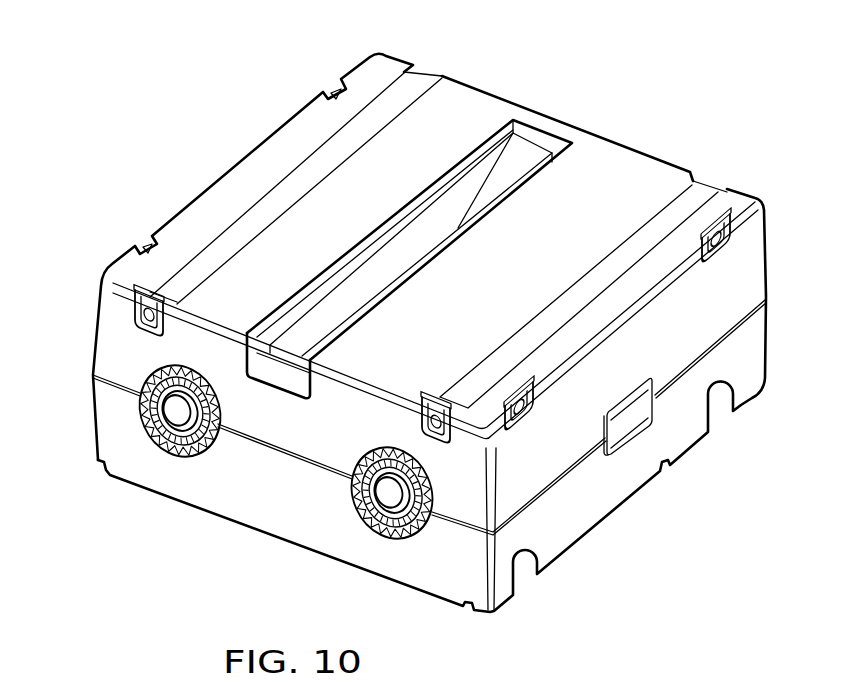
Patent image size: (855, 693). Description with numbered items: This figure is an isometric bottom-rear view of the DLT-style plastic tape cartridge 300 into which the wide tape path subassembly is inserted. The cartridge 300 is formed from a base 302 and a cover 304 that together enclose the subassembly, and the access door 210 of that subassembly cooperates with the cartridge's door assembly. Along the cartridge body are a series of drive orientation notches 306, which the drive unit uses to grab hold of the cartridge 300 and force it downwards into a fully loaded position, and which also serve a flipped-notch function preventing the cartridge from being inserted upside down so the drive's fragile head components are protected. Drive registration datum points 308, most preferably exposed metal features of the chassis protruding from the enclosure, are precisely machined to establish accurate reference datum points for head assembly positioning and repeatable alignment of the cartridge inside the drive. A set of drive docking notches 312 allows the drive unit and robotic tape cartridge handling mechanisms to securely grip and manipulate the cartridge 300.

The tape cartridge 300 is at (104, 555).
The base 302 is at (474, 108).
The cover 304 is at (247, 528).
The drive orientation notches 306 is at (718, 418).
The drive registration datum points 308 is at (424, 72).
The access door 210 is at (532, 156).
The drive docking notches 312 is at (337, 90).